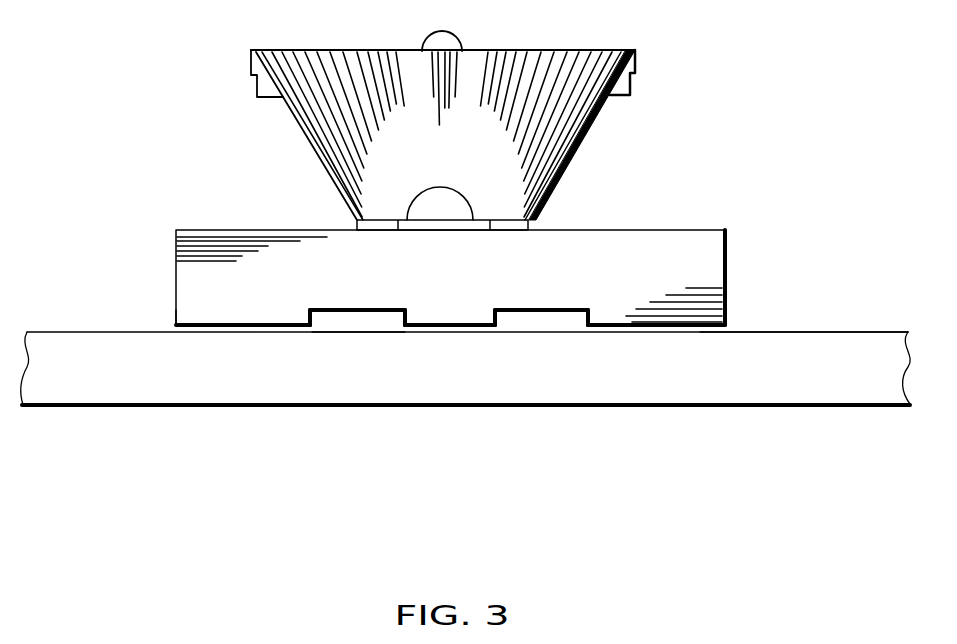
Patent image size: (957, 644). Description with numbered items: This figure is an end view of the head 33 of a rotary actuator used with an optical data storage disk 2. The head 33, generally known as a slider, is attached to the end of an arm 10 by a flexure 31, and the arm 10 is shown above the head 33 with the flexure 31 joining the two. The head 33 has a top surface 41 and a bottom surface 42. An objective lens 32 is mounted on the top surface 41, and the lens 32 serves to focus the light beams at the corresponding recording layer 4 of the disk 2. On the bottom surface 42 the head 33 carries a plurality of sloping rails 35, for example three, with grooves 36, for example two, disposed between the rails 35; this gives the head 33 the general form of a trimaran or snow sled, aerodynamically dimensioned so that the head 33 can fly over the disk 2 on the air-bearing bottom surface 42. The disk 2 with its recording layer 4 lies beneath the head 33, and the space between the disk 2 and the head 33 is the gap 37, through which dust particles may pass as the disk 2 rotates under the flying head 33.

The optical data storage disk 2 is at (790, 385).
The recording layer 4 is at (803, 331).
The arm 10 is at (476, 130).
The flexure 31 is at (320, 160).
The objective lens 32 is at (456, 191).
The head 33 is at (640, 230).
The sloping rails 35 is at (228, 325).
The grooves 36 is at (359, 310).
The gap 37 is at (173, 330).
The top surface 41 is at (218, 230).
The bottom surface 42 is at (316, 333).